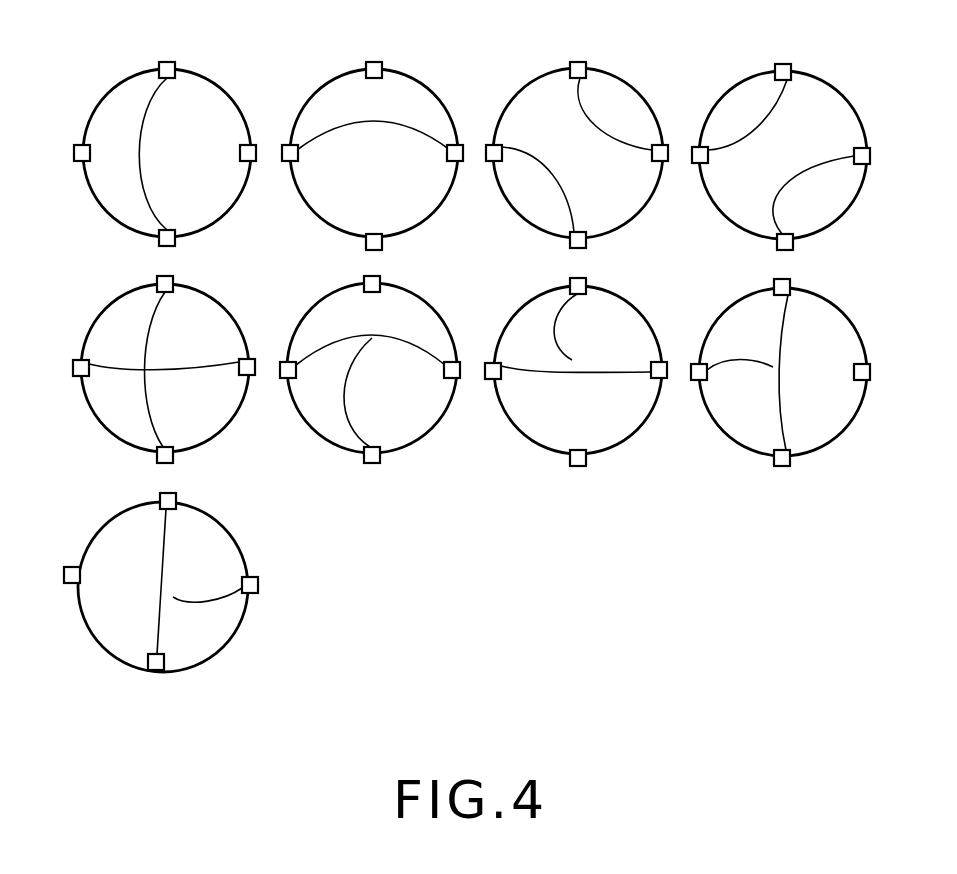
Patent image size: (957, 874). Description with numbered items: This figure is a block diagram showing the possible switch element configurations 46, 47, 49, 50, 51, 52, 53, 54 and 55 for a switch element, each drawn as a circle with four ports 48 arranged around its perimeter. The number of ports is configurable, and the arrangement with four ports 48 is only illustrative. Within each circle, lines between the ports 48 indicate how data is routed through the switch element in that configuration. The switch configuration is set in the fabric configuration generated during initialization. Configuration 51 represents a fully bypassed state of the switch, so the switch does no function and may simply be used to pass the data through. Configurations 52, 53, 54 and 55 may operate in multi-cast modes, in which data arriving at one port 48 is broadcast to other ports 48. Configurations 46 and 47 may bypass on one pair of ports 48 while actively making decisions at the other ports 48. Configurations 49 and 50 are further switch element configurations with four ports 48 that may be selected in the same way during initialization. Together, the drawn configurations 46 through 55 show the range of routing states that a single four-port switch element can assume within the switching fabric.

The switch element configuration 46 is at (167, 153).
The switch element configuration 47 is at (374, 153).
The port 48 is at (461, 368).
The switch element configuration 49 is at (578, 153).
The switch element configuration 50 is at (783, 155).
The switch element configuration 51 is at (165, 368).
The switch element configuration 52 is at (372, 368).
The switch element configuration 53 is at (578, 370).
The switch element configuration 54 is at (783, 372).
The switch element configuration 55 is at (163, 587).